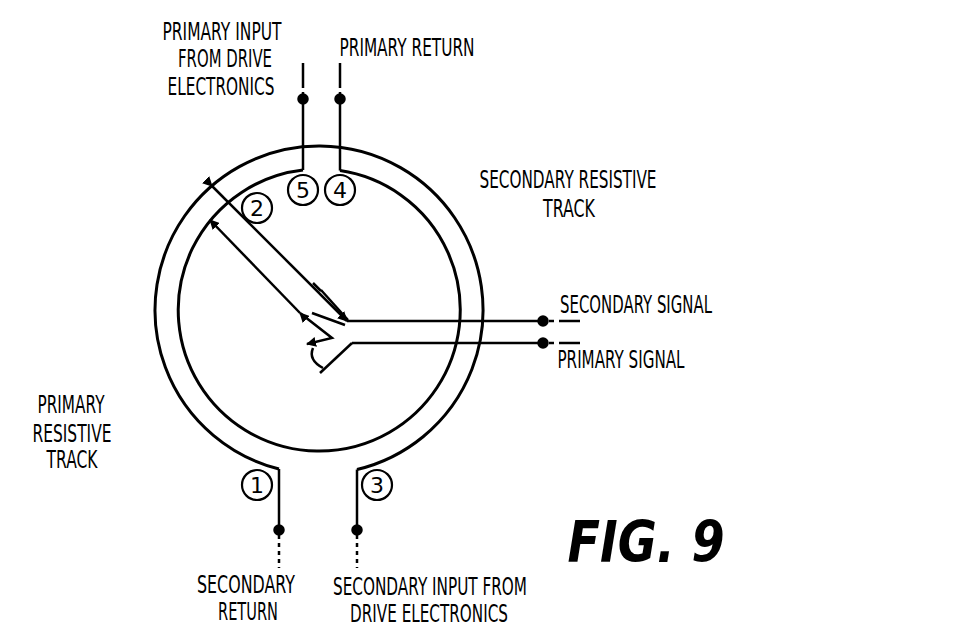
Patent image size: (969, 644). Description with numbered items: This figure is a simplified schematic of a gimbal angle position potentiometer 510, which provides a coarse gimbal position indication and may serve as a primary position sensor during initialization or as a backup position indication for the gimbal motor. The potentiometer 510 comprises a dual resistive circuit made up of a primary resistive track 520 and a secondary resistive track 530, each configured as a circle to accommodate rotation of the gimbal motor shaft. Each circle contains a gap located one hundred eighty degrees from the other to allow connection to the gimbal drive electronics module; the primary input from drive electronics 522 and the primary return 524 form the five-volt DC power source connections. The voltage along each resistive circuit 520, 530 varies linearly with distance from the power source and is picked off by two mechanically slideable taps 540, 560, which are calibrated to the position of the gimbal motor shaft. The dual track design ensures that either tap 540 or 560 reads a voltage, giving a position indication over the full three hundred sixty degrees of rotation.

The potentiometer 510 is at (708, 196).
The primary resistive circuit 520 is at (191, 370).
The 5v DC power source 522 is at (303, 86).
The 5v DC power source 524 is at (340, 80).
The secondary resistive circuit 530 is at (467, 225).
The mechanically slideable tap 540 is at (260, 235).
The mechanically slideable tap 560 is at (247, 259).